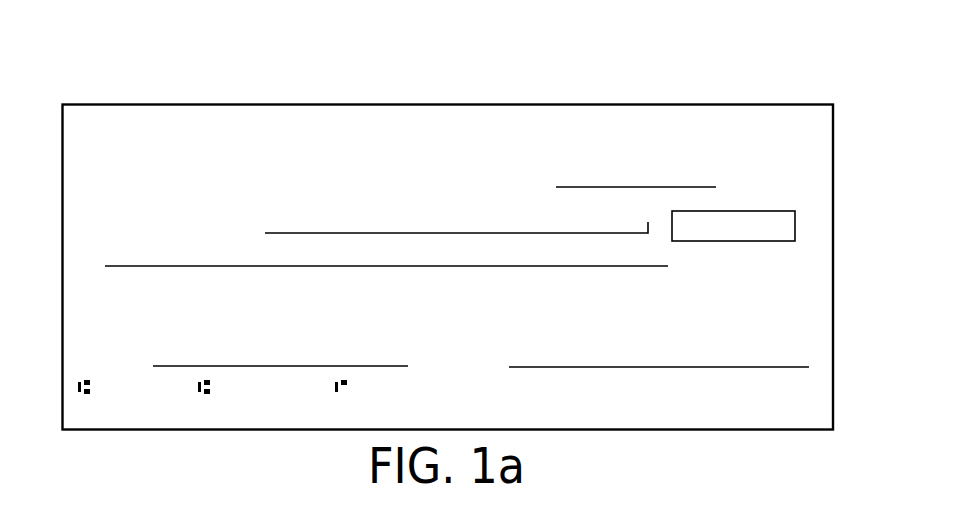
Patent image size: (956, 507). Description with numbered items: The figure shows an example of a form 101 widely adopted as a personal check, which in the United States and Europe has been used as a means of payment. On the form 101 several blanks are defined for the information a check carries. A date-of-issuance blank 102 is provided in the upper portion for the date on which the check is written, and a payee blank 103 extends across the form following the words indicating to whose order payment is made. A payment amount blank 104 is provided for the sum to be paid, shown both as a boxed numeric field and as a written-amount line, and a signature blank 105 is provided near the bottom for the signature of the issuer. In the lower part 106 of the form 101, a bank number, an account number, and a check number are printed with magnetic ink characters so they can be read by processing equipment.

The form 101 is at (215, 104).
The date-of-issuance blank 102 is at (636, 172).
The payee blank 103 is at (411, 212).
The payment amount blank 104 is at (753, 216).
The signature blank 105 is at (696, 358).
The lower part 106 is at (237, 402).